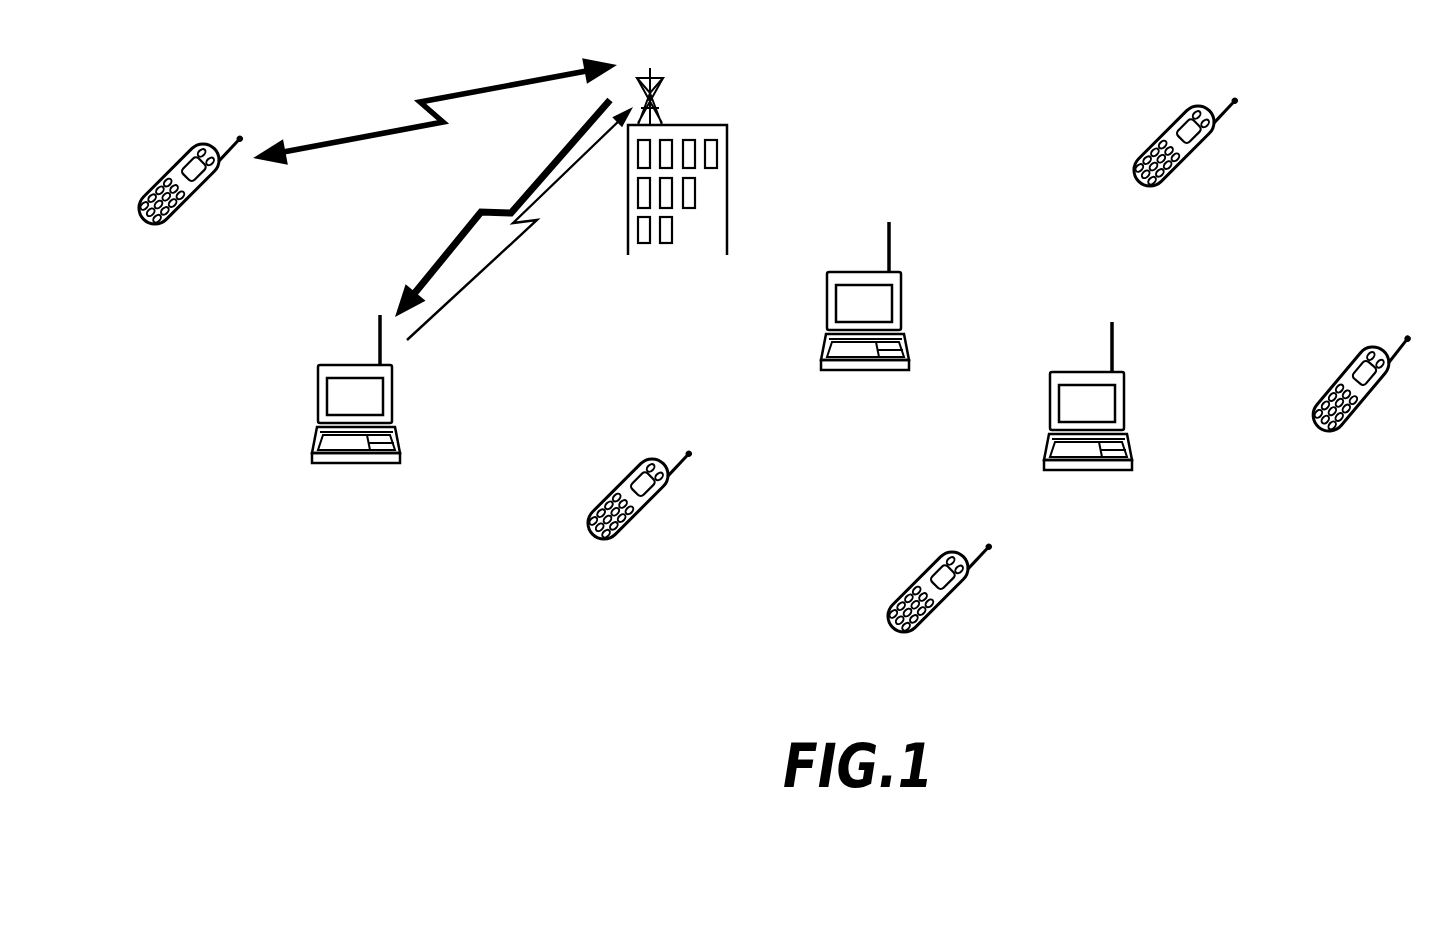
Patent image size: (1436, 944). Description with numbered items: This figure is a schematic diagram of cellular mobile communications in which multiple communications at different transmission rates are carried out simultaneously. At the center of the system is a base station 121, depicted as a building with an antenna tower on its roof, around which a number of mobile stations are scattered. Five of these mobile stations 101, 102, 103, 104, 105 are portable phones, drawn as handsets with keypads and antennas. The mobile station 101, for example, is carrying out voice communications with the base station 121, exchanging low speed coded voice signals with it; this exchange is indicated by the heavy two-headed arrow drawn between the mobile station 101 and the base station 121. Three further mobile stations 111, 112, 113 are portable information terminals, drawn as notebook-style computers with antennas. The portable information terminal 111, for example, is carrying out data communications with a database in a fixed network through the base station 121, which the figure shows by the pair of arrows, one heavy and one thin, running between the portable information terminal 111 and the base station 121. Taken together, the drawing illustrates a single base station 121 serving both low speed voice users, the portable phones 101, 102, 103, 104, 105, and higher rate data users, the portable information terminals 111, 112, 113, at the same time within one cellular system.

The mobile station 101 is at (200, 193).
The mobile station 102 is at (645, 512).
The mobile station 103 is at (1200, 150).
The mobile station 104 is at (950, 598).
The mobile station 105 is at (1315, 423).
The portable information terminal 111 is at (395, 415).
The portable information terminal 112 is at (903, 298).
The portable information terminal 113 is at (1123, 407).
The base station 121 is at (708, 123).